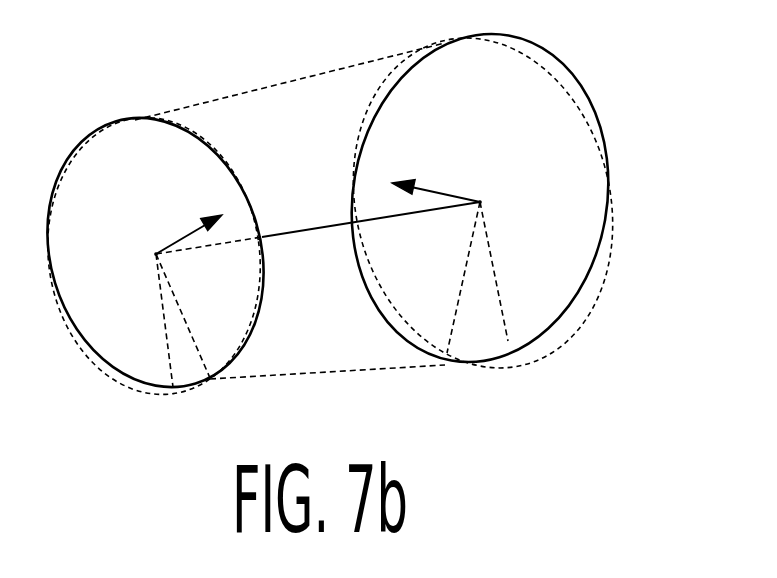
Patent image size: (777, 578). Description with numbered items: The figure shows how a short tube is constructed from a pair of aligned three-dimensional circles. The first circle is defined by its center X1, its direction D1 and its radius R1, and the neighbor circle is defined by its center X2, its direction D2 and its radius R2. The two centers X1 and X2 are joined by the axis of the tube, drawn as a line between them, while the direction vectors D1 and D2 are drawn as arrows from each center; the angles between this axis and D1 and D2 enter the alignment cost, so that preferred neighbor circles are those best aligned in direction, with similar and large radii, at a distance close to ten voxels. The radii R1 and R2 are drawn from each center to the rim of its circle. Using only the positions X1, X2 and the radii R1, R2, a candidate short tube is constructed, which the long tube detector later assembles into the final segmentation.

The center of the first 3D circle X1 is at (135, 253).
The direction of the first 3D circle D1 is at (189, 212).
The radius of the first 3D circle R1 is at (168, 320).
The center of the second 3D circle X2 is at (518, 193).
The direction of the second 3D circle D2 is at (436, 164).
The radius of the second 3D circle R2 is at (499, 277).